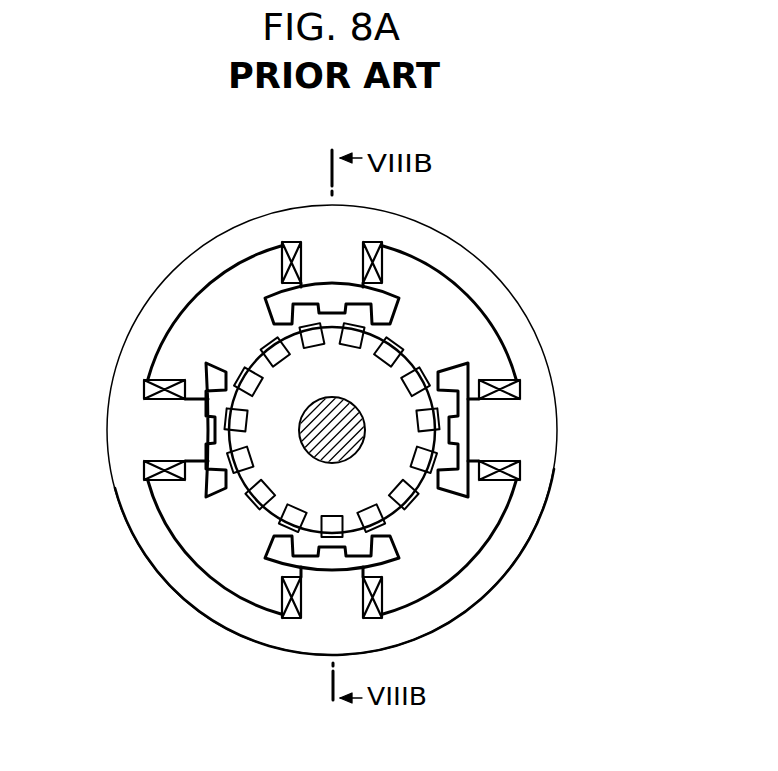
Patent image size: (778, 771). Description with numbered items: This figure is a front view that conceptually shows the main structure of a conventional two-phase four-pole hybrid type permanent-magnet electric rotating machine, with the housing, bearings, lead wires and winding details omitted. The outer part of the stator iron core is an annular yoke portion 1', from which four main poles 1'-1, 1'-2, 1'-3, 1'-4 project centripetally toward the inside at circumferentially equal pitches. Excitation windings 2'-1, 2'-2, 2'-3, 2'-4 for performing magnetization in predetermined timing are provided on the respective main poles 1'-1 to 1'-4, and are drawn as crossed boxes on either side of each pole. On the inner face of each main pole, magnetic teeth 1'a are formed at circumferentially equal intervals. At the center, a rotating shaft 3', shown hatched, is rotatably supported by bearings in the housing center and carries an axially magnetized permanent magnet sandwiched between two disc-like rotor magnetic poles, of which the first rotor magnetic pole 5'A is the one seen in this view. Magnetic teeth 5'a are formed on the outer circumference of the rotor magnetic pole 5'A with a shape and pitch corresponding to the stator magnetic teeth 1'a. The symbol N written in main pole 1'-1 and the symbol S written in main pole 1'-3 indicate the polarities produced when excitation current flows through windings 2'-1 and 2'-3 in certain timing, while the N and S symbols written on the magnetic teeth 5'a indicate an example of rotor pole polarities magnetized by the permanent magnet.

The annular yoke portion 1' is at (332, 427).
The magnetic teeth 1'a is at (412, 293).
The main pole 1'-1 is at (392, 247).
The main pole 1'-2 is at (540, 430).
The main pole 1'-3 is at (376, 610).
The main pole 1'-4 is at (128, 430).
The excitation winding 2'-1 is at (396, 230).
The excitation winding 2'-2 is at (554, 455).
The excitation winding 2'-3 is at (292, 631).
The excitation winding 2'-4 is at (125, 381).
The rotating shaft 3' is at (332, 427).
The first rotor magnetic pole 5'A is at (412, 451).
The magnetic teeth 5'a is at (484, 538).